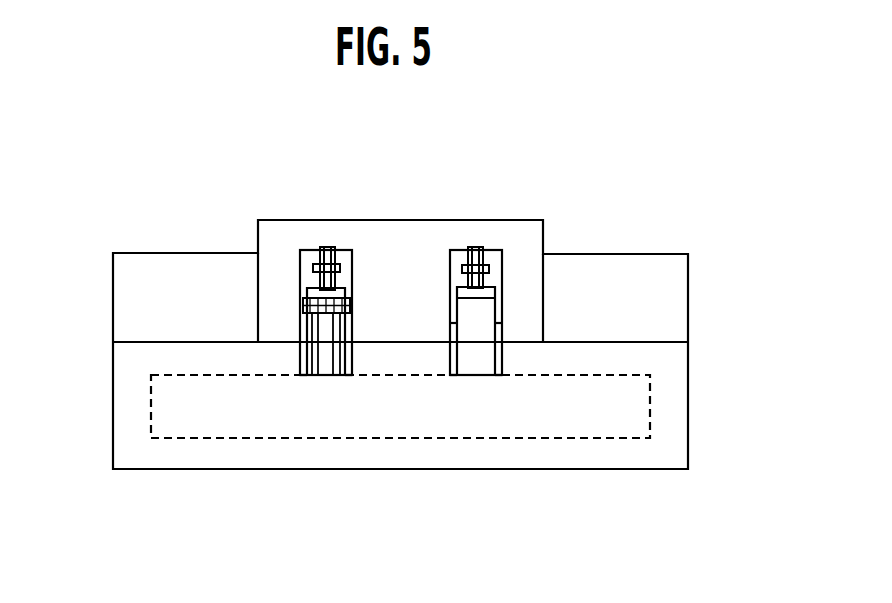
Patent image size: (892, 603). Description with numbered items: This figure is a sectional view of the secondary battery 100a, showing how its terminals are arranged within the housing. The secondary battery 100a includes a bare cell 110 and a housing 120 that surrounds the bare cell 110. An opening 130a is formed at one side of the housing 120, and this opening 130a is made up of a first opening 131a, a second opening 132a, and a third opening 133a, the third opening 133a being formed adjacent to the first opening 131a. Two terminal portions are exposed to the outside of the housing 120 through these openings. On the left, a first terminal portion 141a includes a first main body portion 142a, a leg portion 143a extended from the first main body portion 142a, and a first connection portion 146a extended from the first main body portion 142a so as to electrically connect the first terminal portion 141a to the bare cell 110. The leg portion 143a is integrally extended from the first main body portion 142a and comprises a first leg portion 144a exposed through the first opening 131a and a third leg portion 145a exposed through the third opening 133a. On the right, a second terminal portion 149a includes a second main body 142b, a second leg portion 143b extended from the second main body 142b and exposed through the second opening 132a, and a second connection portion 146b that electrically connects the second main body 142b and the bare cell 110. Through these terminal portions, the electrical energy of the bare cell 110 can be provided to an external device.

The secondary battery 100a is at (137, 126).
The bare cell 110 is at (635, 412).
The housing 120 is at (100, 436).
The opening 130a is at (473, 158).
The first opening 131a is at (325, 247).
The second opening 132a is at (469, 247).
The third opening 133a is at (352, 303).
The first terminal portion 141a is at (290, 257).
The first main body portion 142a is at (338, 320).
The leg portion 143a is at (287, 444).
The first leg portion 144a is at (313, 313).
The third leg portion 145a is at (330, 313).
The first connection portion 146a is at (350, 335).
The second terminal portion 149a is at (515, 255).
The second main body 142b is at (478, 295).
The second leg portion 143b is at (481, 247).
The second connection portion 146b is at (497, 335).